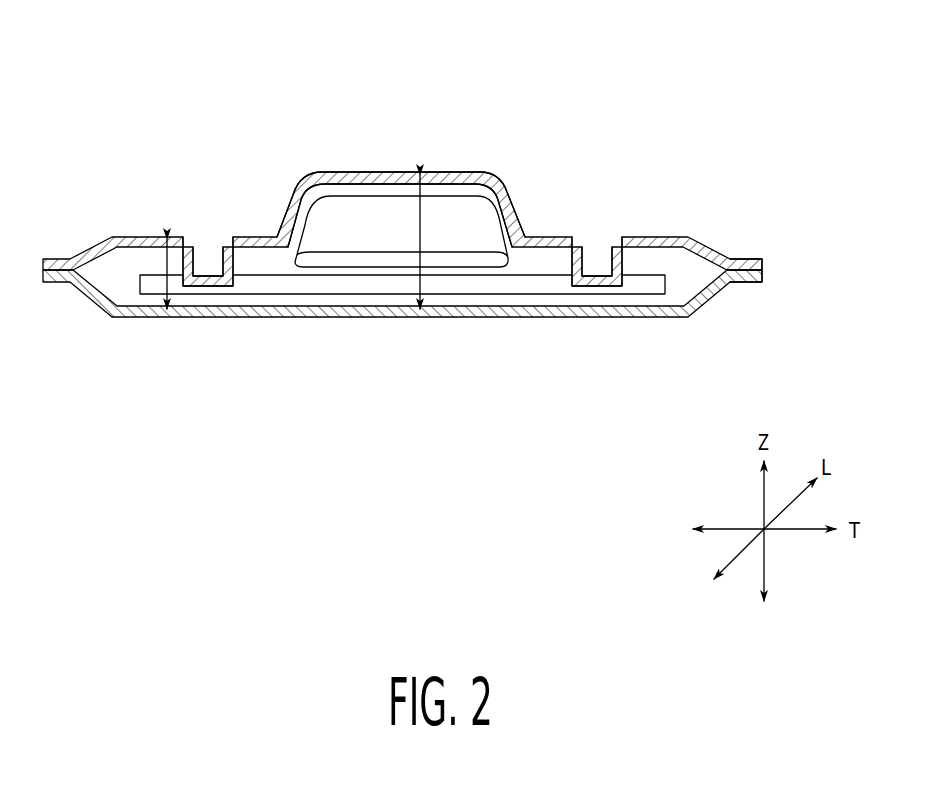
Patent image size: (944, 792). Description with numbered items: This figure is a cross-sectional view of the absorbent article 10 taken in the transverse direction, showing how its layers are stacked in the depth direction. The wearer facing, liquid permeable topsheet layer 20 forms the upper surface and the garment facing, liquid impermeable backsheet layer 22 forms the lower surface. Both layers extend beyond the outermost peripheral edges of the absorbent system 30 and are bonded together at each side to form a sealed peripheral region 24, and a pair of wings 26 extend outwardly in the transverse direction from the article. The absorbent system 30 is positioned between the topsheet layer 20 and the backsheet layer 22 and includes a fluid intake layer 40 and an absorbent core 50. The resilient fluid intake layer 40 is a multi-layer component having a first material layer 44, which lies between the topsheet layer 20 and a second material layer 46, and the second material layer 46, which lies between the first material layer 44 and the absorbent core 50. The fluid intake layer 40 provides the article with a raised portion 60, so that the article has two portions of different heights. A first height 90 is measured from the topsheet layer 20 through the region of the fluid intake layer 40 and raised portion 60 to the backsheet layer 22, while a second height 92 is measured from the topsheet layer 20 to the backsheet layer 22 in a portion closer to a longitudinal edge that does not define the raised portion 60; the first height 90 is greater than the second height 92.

The absorbent article 10 is at (113, 112).
The topsheet layer 20 is at (668, 236).
The backsheet layer 22 is at (582, 318).
The sealed peripheral region 24 is at (762, 262).
The wings 26 is at (212, 244).
The absorbent system 30 is at (542, 260).
The fluid intake layer 40 is at (323, 222).
The first material layer 44 is at (383, 227).
The second material layer 46 is at (467, 260).
The absorbent core 50 is at (287, 285).
The raised portion 60 is at (475, 117).
The first absorbent article height 90 is at (418, 240).
The second absorbent article height 92 is at (163, 258).